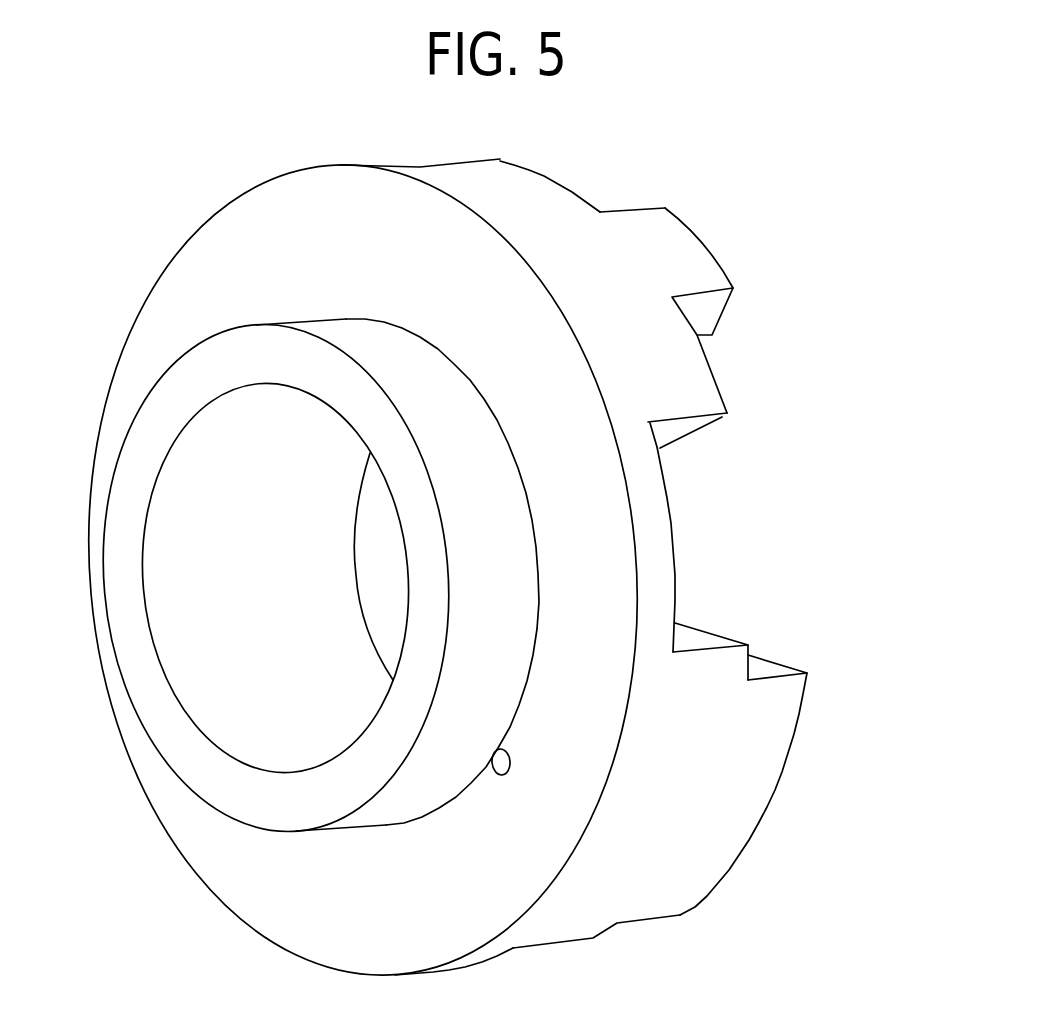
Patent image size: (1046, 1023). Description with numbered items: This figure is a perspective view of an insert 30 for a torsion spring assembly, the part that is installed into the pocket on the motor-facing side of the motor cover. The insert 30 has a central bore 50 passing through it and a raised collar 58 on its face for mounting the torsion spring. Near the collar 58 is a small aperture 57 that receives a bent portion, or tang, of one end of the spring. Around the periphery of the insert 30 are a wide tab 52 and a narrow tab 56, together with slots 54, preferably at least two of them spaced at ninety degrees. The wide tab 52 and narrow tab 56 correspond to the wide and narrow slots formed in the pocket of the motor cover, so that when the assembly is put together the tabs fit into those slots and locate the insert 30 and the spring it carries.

The insert 30 is at (100, 237).
The central bore 50 is at (262, 572).
The wide tab 52 is at (780, 780).
The slots 54 is at (717, 510).
The narrow tab 56 is at (704, 247).
The aperture 57 is at (508, 766).
The collar 58 is at (460, 448).